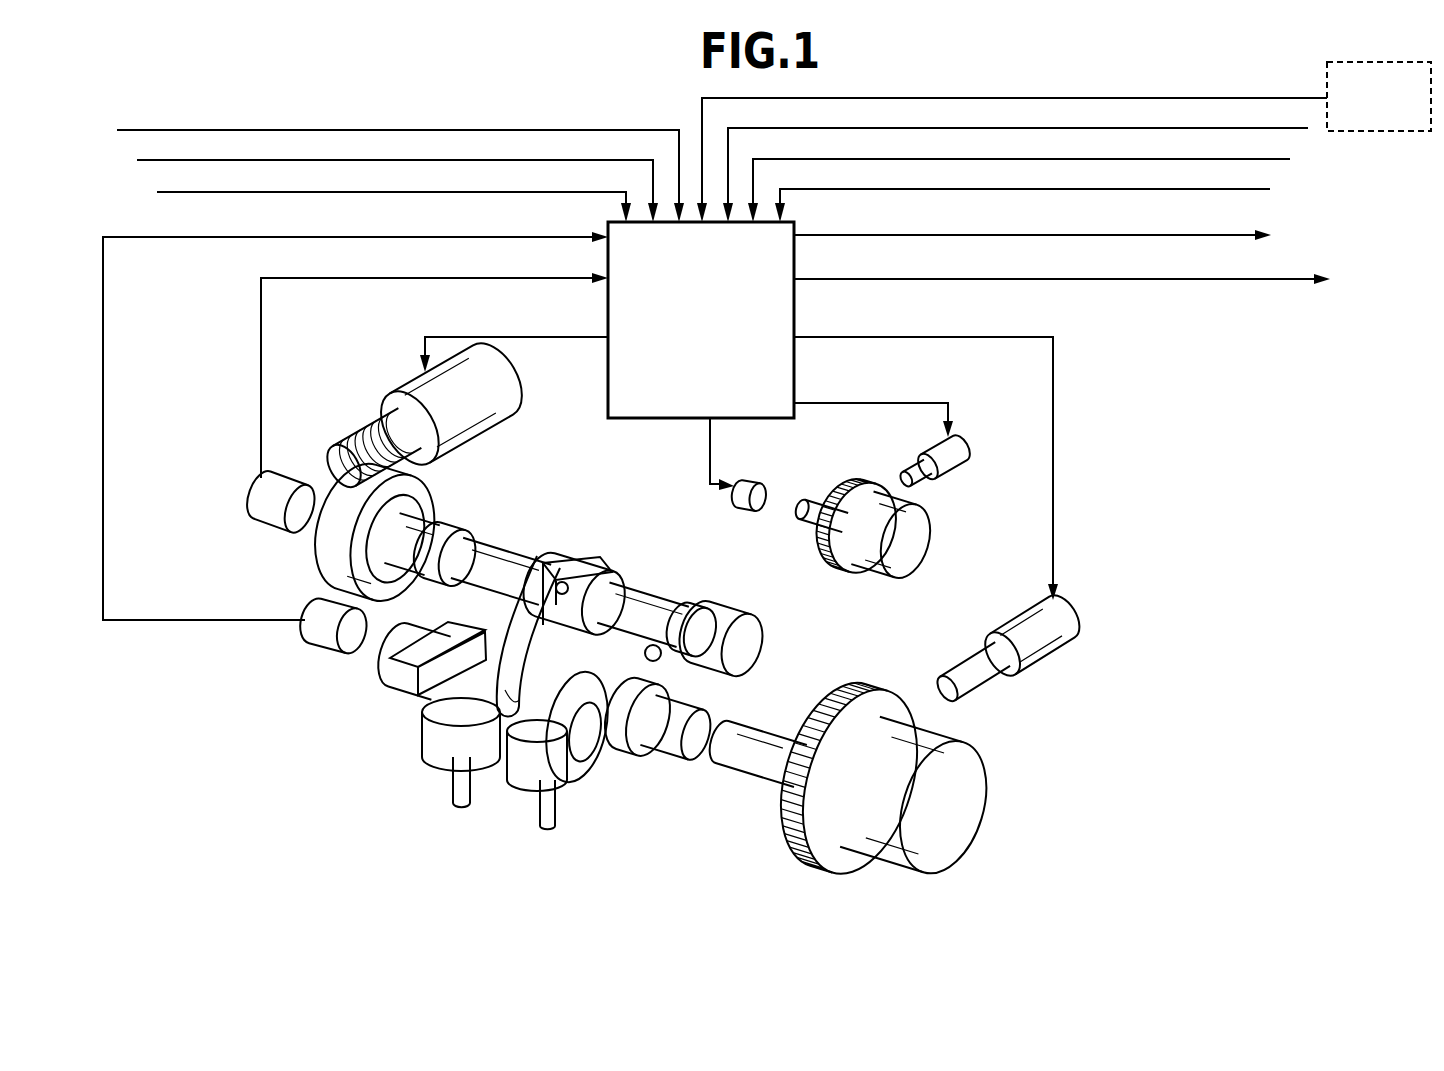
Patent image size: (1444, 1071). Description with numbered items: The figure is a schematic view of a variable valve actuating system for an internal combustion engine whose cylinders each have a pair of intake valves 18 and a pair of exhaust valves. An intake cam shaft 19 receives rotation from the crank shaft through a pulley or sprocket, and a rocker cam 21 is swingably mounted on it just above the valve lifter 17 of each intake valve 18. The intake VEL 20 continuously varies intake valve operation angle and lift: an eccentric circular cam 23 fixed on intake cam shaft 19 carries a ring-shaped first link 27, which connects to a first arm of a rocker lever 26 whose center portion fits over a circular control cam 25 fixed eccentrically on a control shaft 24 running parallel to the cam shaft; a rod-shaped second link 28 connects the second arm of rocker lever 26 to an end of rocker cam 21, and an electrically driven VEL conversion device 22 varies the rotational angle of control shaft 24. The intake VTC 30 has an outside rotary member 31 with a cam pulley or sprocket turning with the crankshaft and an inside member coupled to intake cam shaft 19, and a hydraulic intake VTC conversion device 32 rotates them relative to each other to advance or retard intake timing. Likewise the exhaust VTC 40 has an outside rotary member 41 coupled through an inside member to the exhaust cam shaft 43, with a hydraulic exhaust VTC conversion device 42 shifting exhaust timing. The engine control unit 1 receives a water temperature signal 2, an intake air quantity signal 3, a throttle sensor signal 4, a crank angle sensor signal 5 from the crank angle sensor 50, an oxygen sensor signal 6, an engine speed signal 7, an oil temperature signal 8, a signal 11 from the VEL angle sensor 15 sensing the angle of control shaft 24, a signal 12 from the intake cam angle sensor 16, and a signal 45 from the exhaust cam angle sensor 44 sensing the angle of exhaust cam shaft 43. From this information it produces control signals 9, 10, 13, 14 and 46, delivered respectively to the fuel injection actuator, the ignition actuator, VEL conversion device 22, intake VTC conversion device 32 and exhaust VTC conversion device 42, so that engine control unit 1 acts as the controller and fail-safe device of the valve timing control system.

The engine control unit 1 is at (644, 419).
The water temperature signal 2 is at (400, 161).
The intake air quantity signal 3 is at (397, 176).
The throttle sensor signal 4 is at (394, 192).
The crank angle sensor signal 5 is at (1012, 146).
The oxygen sensor signal 6 is at (1015, 160).
The engine speed signal 7 is at (1019, 176).
The oil temperature sensor signal 8 is at (1022, 192).
The control signal 9 is at (1032, 222).
The control signal 10 is at (1062, 265).
The VEL angle sensor signal 11 is at (413, 362).
The intake cam angle sensor signal 12 is at (355, 413).
The control signal 13 is at (465, 328).
The control signal 14 is at (982, 443).
The VEL angle sensor 15 is at (276, 515).
The intake cam angle sensor 16 is at (312, 628).
The valve lifter 17 is at (450, 752).
The intake valve 18 is at (543, 808).
The intake cam shaft 19 is at (748, 753).
The intake VEL 20 is at (615, 525).
The rocker cam 21 is at (405, 673).
The VEL conversion device 22 is at (497, 402).
The eccentric circular cam 23 is at (597, 757).
The control shaft 24 is at (735, 615).
The control cam 25 is at (681, 610).
The rocker lever 26 is at (578, 582).
The first link 27 is at (563, 750).
The second link 28 is at (533, 622).
The intake VTC 30 is at (895, 720).
The outside rotary member 31 is at (840, 700).
The intake VTC conversion device 32 is at (1015, 620).
The exhaust VTC 40 is at (917, 503).
The outside rotary member 41 is at (848, 486).
The exhaust VTC conversion device 42 is at (960, 452).
The exhaust cam shaft 43 is at (818, 522).
The exhaust cam angle sensor 44 is at (737, 495).
The exhaust cam angle sensor signal 45 is at (712, 440).
The control signal 46 is at (919, 388).
The crank angle sensor 50 is at (1368, 131).